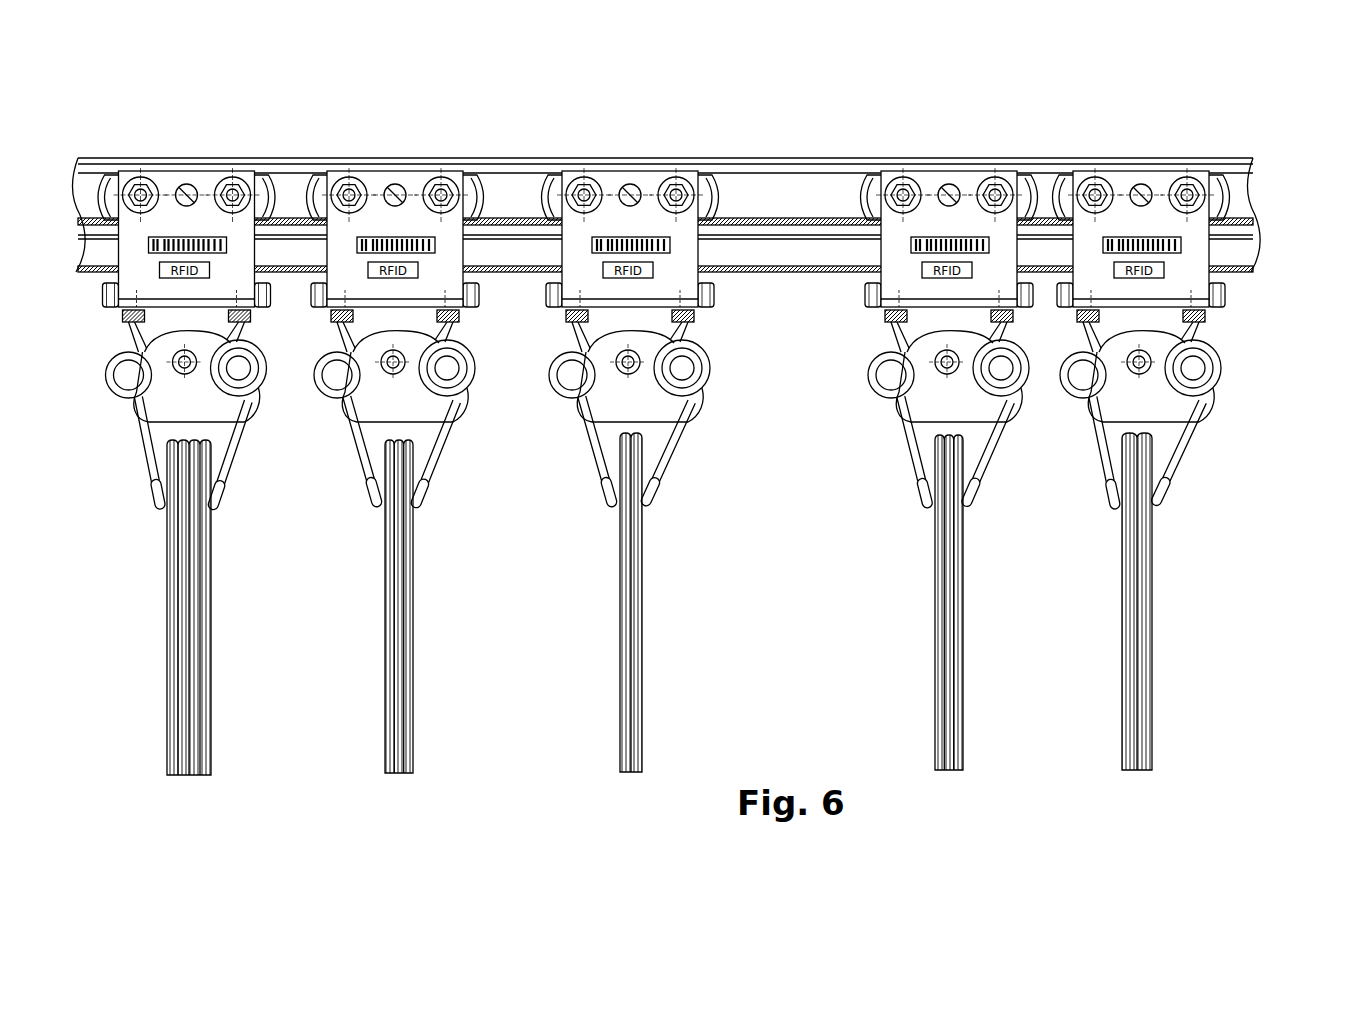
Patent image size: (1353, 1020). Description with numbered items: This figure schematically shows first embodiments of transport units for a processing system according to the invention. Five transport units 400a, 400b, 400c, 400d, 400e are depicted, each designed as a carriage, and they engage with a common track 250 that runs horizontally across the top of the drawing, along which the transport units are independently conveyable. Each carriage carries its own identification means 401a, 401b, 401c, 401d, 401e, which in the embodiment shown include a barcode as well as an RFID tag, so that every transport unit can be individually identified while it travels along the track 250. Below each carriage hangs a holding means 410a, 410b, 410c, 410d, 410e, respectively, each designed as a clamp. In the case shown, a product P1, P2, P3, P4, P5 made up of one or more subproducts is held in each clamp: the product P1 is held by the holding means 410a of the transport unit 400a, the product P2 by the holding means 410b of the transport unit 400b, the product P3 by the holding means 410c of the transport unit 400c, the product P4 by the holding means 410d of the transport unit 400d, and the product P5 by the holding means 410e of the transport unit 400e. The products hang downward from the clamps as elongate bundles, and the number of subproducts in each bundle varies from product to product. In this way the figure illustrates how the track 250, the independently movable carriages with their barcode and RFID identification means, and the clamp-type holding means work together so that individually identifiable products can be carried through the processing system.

The track 250 is at (786, 160).
The transport unit 400a is at (206, 190).
The transport unit 400b is at (415, 192).
The transport unit 400c is at (650, 190).
The transport unit 400d is at (967, 192).
The transport unit 400e is at (1158, 207).
The identification means 401a is at (203, 272).
The identification means 401b is at (411, 272).
The identification means 401c is at (629, 269).
The identification means 401d is at (946, 272).
The identification means 401e is at (1142, 272).
The holding means 410a is at (247, 462).
The holding means 410b is at (459, 455).
The holding means 410c is at (690, 442).
The holding means 410d is at (876, 458).
The holding means 410e is at (1208, 447).
The product P1 is at (230, 750).
The product P2 is at (430, 756).
The product P3 is at (657, 661).
The product P4 is at (977, 748).
The product P5 is at (1164, 714).